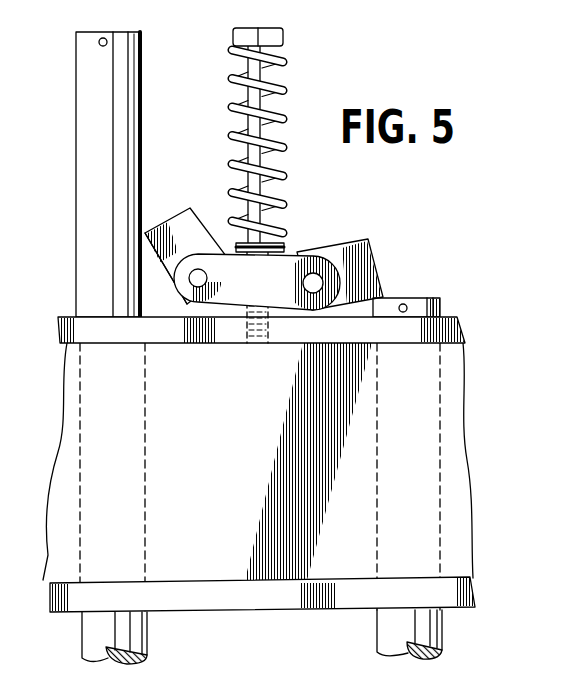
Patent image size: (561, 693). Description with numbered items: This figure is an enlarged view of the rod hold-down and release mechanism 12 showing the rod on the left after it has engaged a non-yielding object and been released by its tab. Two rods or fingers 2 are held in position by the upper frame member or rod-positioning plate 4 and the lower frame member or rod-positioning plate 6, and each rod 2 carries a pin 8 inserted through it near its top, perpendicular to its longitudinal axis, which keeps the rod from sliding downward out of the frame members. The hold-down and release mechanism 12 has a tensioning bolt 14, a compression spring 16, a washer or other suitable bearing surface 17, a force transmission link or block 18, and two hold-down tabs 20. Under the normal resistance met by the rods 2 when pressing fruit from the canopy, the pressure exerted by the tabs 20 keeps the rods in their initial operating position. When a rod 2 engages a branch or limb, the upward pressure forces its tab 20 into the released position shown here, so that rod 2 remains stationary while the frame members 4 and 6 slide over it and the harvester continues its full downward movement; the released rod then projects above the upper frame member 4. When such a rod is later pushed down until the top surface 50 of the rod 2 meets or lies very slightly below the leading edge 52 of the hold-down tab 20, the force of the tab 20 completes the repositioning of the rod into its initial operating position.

The rods or fingers 2 is at (362, 645).
The upper frame member or rod-positioning plate 4 is at (458, 321).
The lower frame member or rod-positioning plate 6 is at (476, 590).
The pin 8 is at (98, 42).
The rod hold-down and release mechanism 12 is at (296, 200).
The tensioning bolt 14 is at (279, 42).
The compression spring 16 is at (284, 92).
The washer or other suitable bearing surface 17 is at (288, 241).
The force transmission link or block 18 is at (240, 300).
The hold-down tabs 20 is at (170, 234).
The top surface of rod 50 is at (129, 33).
The leading edge of hold-down tab 52 is at (143, 232).